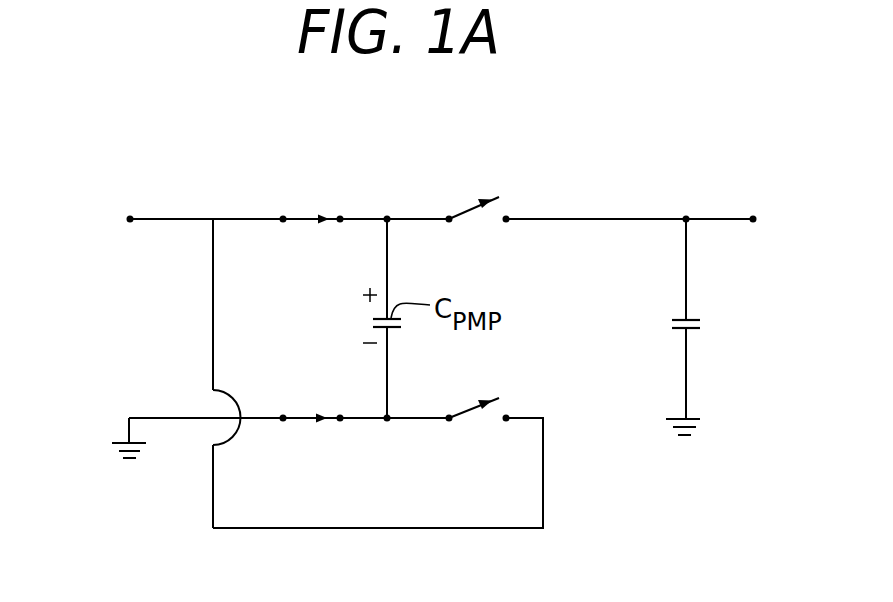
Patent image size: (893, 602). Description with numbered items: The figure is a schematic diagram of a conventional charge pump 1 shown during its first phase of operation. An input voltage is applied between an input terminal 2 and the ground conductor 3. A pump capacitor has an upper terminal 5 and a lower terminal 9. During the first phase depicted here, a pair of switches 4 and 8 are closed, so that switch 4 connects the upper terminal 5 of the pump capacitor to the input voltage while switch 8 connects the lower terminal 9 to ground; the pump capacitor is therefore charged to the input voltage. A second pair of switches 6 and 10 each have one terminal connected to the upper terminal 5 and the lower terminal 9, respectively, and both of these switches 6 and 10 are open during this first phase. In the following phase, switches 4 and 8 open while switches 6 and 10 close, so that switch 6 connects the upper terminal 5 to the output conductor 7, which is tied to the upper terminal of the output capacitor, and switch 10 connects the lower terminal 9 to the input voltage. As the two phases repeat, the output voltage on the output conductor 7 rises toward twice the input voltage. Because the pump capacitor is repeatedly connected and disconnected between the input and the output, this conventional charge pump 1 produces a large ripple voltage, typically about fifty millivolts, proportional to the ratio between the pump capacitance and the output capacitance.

The charge pump 1 is at (161, 507).
The input terminal 2 is at (130, 221).
The ground conductor 3 is at (162, 417).
The switch 4 is at (297, 220).
The upper terminal 5 is at (388, 217).
The switch 6 is at (465, 215).
The output conductor 7 is at (595, 217).
The switch 8 is at (297, 420).
The lower terminal 9 is at (388, 421).
The switch 10 is at (463, 414).